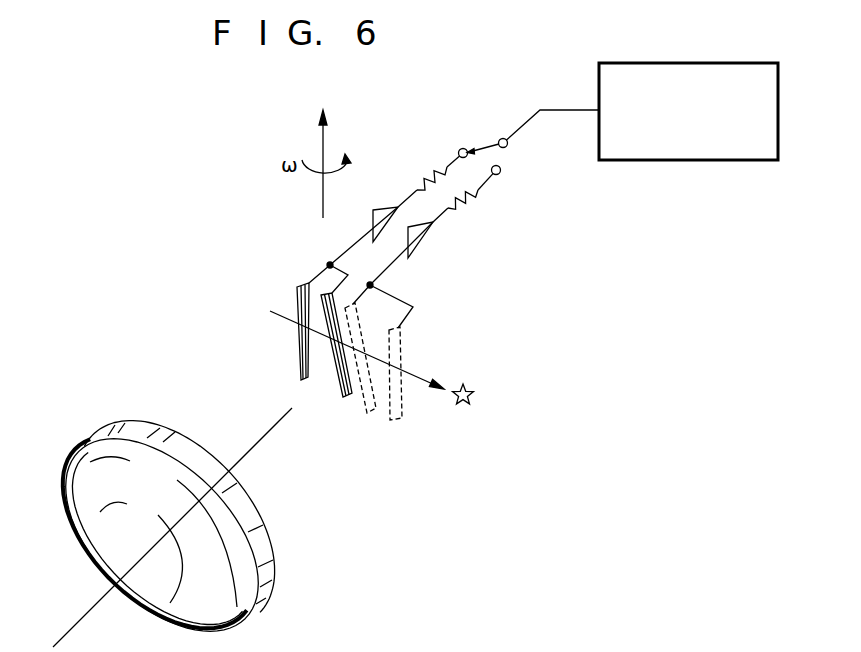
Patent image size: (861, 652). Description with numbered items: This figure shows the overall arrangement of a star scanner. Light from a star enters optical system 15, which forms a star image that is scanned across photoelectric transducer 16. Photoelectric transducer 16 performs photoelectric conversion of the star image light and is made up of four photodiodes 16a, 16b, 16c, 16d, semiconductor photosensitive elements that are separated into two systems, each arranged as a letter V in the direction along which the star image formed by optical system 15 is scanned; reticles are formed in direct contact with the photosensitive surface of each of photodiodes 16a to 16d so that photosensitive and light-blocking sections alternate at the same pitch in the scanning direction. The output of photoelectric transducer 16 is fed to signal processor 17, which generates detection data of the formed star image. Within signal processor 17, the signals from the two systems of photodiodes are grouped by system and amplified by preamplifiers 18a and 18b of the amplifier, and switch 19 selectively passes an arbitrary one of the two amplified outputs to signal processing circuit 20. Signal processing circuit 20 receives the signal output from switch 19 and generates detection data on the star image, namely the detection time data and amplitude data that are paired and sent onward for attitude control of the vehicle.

The optical system 15 is at (270, 550).
The photoelectric transducer 16 is at (359, 358).
The photodiode 16a is at (298, 371).
The photodiode 16b is at (348, 397).
The photodiode 16c is at (368, 412).
The photodiode 16d is at (403, 415).
The signal processor 17 is at (458, 230).
The preamplifier 18a is at (384, 207).
The preamplifier 18b is at (424, 240).
The switch 19 is at (488, 143).
The signal processing circuit 20 is at (697, 160).